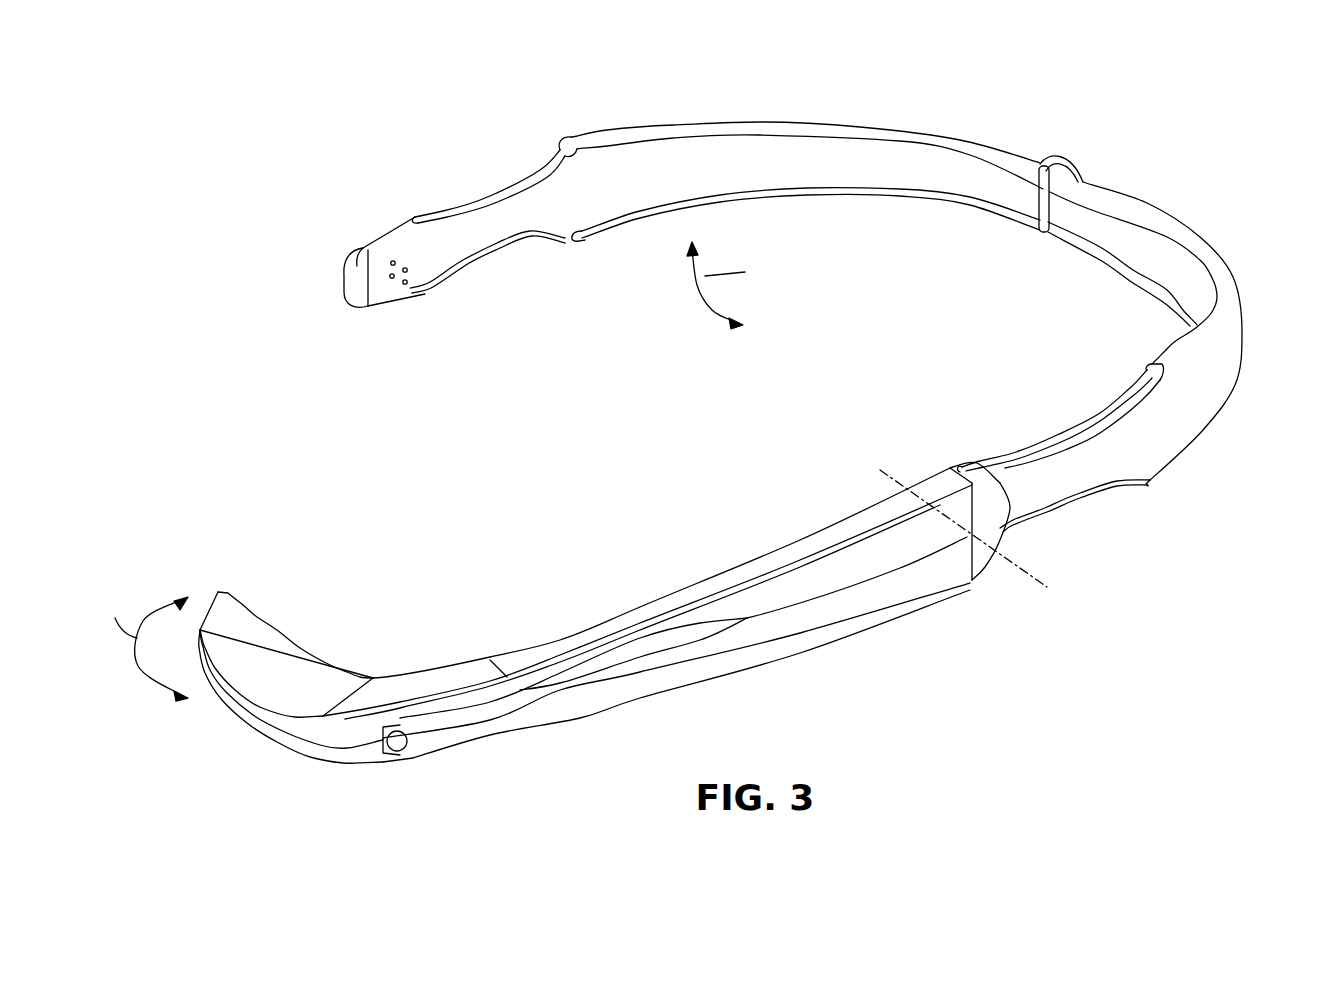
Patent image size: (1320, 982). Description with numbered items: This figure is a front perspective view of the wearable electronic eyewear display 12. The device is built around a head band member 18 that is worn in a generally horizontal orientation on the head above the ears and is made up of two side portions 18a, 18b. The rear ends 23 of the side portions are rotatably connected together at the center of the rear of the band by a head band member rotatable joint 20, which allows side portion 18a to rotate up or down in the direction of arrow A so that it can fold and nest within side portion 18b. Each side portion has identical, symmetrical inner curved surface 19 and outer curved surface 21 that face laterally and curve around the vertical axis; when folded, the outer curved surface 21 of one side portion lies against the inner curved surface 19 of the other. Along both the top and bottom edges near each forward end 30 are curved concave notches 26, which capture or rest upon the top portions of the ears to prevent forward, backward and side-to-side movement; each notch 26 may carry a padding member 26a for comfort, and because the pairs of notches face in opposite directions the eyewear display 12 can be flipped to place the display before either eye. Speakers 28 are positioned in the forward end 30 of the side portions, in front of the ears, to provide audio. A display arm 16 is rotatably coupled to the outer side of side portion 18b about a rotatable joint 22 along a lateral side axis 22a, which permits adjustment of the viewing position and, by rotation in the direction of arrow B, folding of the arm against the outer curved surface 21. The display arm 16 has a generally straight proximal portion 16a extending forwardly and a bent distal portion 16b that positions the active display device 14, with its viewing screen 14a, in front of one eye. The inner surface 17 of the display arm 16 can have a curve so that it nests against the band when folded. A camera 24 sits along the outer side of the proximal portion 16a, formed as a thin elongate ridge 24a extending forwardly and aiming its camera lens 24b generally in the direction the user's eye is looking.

The wearable electronic eyewear display 12 is at (700, 445).
The active display device 14 is at (286, 613).
The viewing screen 14a is at (231, 590).
The display arm 16 is at (643, 612).
The proximal portion 16a is at (723, 582).
The distal portion 16b is at (293, 687).
The inner surface 17 is at (555, 640).
The head band member 18 is at (926, 276).
The side portion 18a is at (877, 138).
The side portion 18b is at (1140, 210).
The inner curved surface 19 is at (900, 170).
The head band member rotatable joint 20 is at (1073, 167).
The outer curved surface 21 is at (960, 139).
The rotatable joint 22 is at (984, 567).
The side axis 22a is at (1044, 588).
The rear end 23 is at (1020, 200).
The camera 24 is at (671, 707).
The elongate ridge 24a is at (503, 717).
The camera lens 24b is at (399, 752).
The notch 26 is at (792, 345).
The padding member 26a is at (490, 200).
The speaker 28 is at (404, 292).
The forward end 30 is at (348, 287).